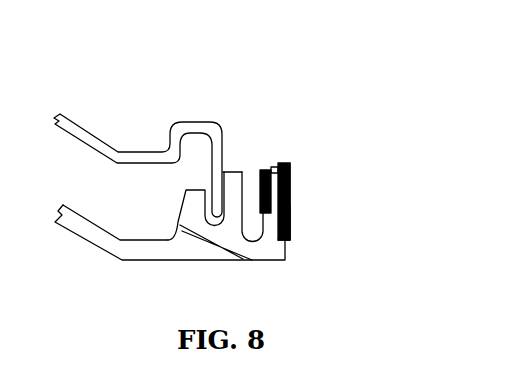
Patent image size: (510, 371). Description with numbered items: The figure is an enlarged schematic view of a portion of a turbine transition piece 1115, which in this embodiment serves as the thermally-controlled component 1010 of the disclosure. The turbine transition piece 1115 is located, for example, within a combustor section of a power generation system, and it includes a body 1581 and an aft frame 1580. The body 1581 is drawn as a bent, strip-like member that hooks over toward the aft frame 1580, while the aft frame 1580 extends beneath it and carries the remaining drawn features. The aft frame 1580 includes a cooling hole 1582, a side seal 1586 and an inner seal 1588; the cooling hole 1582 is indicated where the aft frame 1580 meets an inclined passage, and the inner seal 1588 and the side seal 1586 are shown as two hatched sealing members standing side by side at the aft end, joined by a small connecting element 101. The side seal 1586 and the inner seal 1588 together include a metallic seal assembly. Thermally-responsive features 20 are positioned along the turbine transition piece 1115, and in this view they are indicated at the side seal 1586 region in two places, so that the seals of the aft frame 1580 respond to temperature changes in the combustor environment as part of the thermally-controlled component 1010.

The turbine transition piece 1115 is at (236, 80).
The body 1581 is at (90, 133).
The aft frame 1580 is at (209, 262).
The cooling hole 1582 is at (168, 221).
The inner seal 1588 is at (260, 178).
The connection joint 101 is at (278, 168).
The side seal 1586 is at (291, 176).
The thermally-controlled component 1010 is at (301, 197).
The thermally-responsive features 20 is at (291, 214).